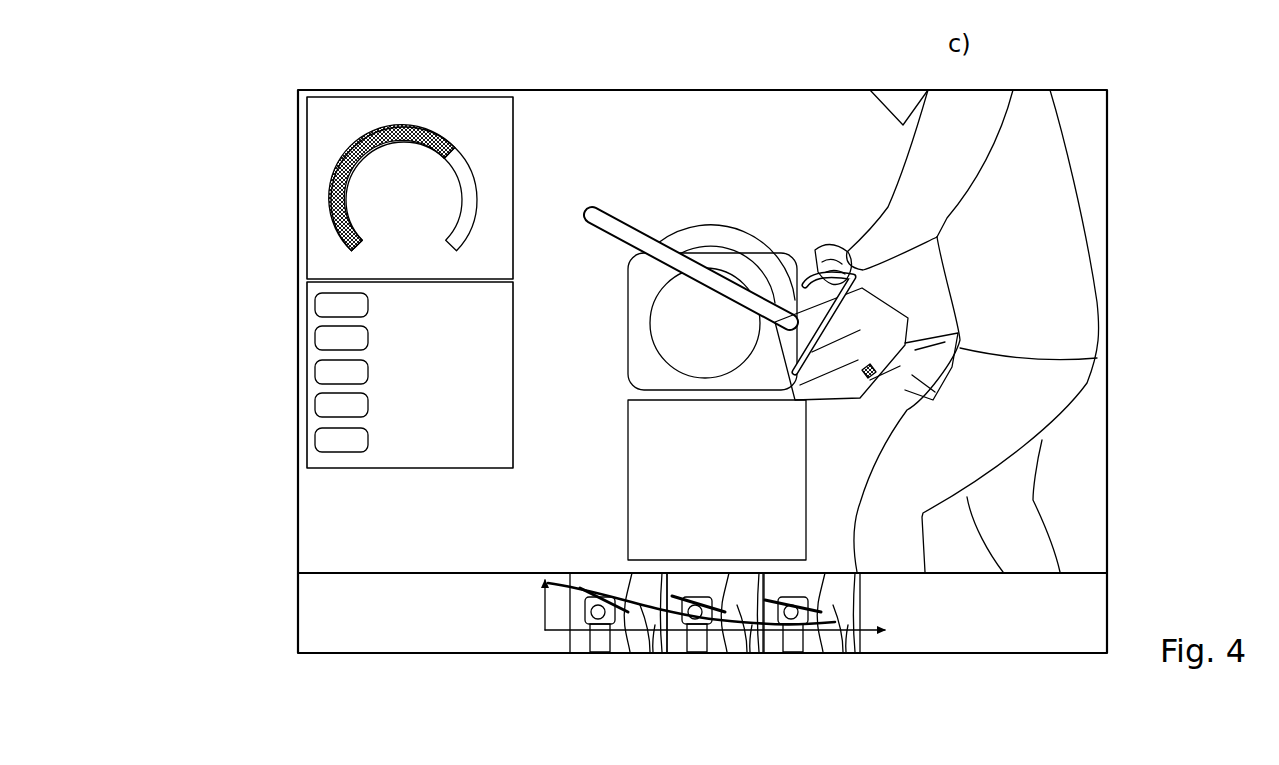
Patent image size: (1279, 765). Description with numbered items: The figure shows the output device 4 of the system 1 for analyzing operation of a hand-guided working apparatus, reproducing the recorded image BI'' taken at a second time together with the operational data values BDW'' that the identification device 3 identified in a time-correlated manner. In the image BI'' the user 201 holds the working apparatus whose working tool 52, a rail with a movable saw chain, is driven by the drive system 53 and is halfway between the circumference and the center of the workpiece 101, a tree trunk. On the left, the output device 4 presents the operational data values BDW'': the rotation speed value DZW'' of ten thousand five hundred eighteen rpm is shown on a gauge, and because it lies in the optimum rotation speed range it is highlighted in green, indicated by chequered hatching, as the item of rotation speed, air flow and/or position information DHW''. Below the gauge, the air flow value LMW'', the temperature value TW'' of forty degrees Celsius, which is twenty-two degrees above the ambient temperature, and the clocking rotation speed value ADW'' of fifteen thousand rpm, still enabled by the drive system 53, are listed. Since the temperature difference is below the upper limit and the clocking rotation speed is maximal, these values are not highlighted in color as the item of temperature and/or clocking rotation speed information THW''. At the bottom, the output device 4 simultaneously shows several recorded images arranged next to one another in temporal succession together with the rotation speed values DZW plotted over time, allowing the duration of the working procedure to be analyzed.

The system 1 is at (259, 92).
The identification device 3 is at (850, 387).
The output device 4 is at (1108, 178).
The working tool 52 is at (672, 272).
The drive system 53 is at (818, 245).
The workpiece 101 is at (683, 310).
The user 201 is at (1062, 288).
The item of rotation speed, air flow and/or position information DHW'' is at (355, 188).
The rotation speed value DZW'' is at (525, 155).
The operational data values BDW'' is at (351, 355).
The air flow value LMW'' is at (539, 297).
The temperature value TW'' is at (514, 367).
The clocking rotation speed value ADW'' is at (557, 436).
The item of temperature and/or clocking rotation speed information THW'' is at (395, 472).
The recorded image BI'' is at (1156, 268).
The rotation speed values DZW is at (687, 615).